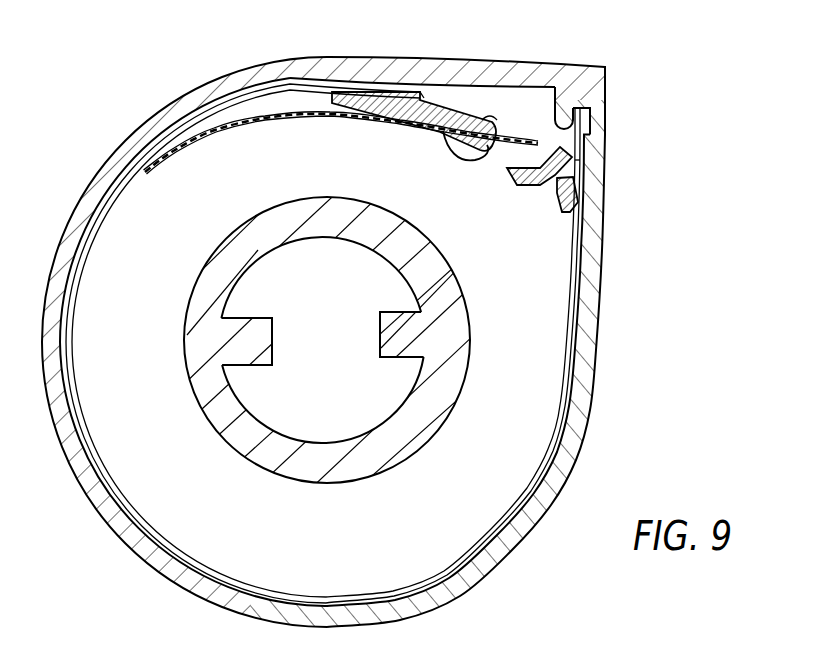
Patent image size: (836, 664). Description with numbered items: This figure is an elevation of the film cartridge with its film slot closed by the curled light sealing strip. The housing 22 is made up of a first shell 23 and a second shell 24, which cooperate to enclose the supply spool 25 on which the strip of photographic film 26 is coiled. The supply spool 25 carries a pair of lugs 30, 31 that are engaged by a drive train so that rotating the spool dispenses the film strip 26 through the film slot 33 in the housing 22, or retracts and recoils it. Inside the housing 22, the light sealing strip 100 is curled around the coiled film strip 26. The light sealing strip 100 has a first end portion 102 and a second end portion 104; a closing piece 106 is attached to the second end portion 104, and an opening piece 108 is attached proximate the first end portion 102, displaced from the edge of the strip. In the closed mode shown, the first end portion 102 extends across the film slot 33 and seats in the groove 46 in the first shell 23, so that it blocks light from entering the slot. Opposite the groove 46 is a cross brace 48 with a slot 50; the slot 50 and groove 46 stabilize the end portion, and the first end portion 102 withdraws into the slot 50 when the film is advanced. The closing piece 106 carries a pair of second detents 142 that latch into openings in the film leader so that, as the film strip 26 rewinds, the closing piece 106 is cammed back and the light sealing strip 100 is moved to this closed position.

The housing 22 is at (360, 327).
The first shell 23 is at (120, 152).
The second shell 24 is at (497, 557).
The supply spool 25 is at (334, 342).
The strip of photographic film 26 is at (340, 130).
The lug 30 is at (390, 343).
The lug 31 is at (263, 335).
The film slot 33 is at (607, 134).
The groove 46 is at (606, 96).
The cross brace 48 is at (512, 185).
The slot 50 is at (578, 172).
The light sealing strip 100 is at (331, 597).
The first end portion 102 is at (587, 144).
The second end portion 104 is at (512, 149).
The closing piece 106 is at (468, 106).
The opening piece 108 is at (553, 193).
The second detents 142 is at (482, 120).